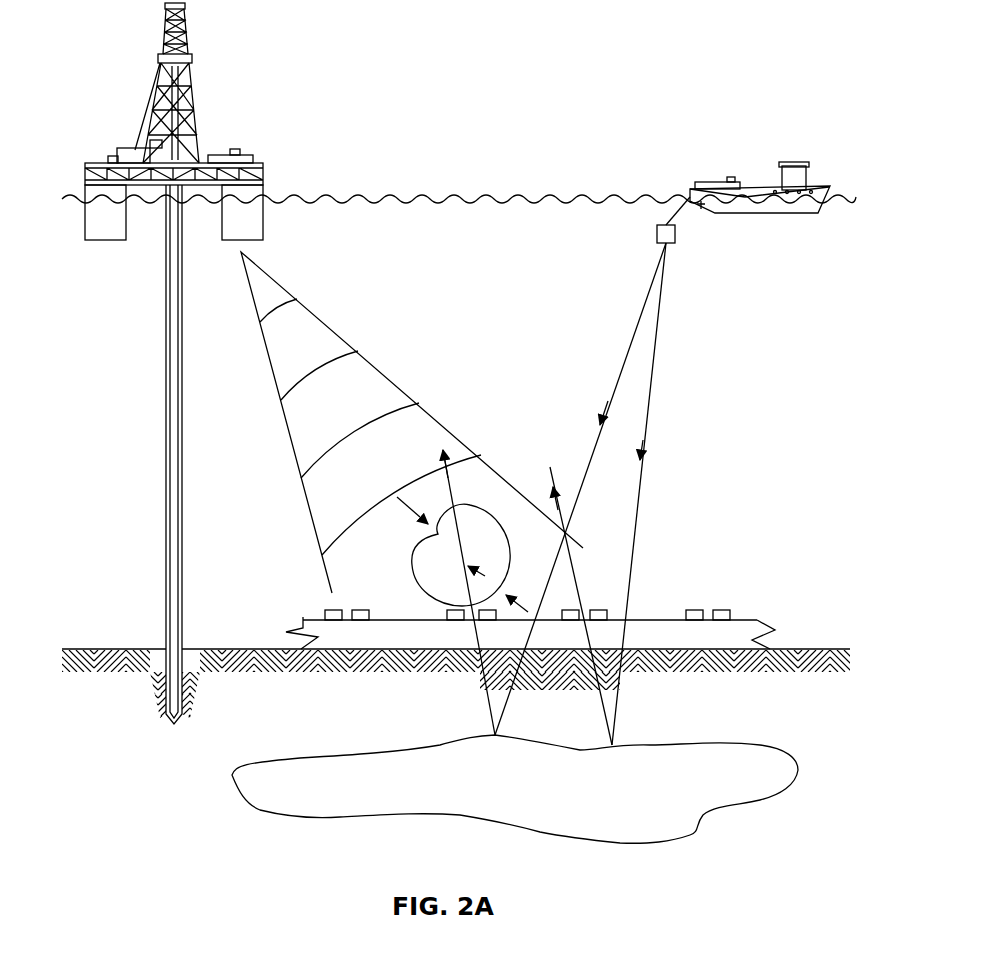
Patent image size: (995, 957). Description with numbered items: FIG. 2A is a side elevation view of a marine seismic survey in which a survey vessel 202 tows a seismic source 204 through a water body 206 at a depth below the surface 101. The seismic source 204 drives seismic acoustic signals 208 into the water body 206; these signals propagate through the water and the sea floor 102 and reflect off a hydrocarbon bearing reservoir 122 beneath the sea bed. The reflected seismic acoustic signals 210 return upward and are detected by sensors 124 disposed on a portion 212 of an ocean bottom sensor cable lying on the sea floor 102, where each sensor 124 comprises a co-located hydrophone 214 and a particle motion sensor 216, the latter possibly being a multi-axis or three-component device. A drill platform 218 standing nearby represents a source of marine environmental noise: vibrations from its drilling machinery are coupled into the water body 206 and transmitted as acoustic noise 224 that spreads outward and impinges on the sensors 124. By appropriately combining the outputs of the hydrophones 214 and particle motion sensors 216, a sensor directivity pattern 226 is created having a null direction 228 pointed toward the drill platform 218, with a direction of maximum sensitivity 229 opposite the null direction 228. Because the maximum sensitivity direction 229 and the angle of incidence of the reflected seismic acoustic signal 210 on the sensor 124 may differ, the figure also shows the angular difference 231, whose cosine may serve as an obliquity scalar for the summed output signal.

The surface 101 is at (458, 197).
The sea floor 102 is at (790, 648).
The hydrocarbon bearing reservoir 122 is at (538, 796).
The sensors 124 is at (341, 575).
The survey vessel 202 is at (795, 165).
The seismic source 204 is at (677, 236).
The water body 206 is at (796, 373).
The seismic acoustic signals 208 is at (651, 412).
The reflected seismic acoustic signals 210 is at (442, 472).
The portion of ocean bottom sensor cable 212 is at (748, 619).
The hydrophone 214 is at (360, 609).
The particle motion sensor 216 is at (333, 609).
The drill platform 218 is at (102, 163).
The acoustic noise 224 is at (335, 327).
The sensor directivity pattern 226 is at (468, 500).
The null direction 228 is at (397, 503).
The direction of maximum sensitivity 229 is at (528, 610).
The angular difference 231 is at (505, 588).